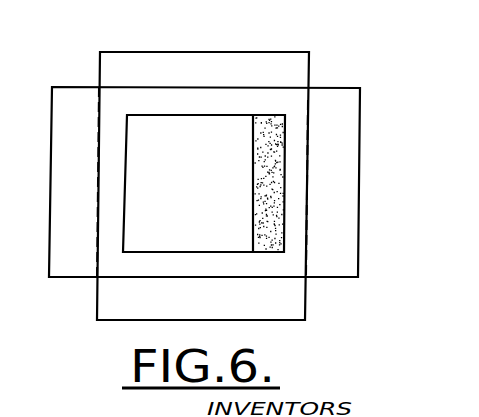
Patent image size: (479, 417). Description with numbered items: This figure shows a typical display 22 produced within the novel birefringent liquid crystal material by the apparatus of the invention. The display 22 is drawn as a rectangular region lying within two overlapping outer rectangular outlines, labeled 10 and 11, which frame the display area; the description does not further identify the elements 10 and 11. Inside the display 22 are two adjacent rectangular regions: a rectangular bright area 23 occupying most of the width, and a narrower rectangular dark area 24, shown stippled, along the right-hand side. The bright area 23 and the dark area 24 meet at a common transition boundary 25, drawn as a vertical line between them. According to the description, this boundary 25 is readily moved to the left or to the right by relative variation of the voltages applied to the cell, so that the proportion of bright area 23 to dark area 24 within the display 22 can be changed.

The film strip / carrier 10 is at (311, 73).
The mount / frame 11 is at (60, 87).
The display 22 is at (138, 103).
The rectangular bright area 23 is at (180, 125).
The rectangular dark area 24 is at (268, 121).
The common transition boundary 25 is at (253, 242).